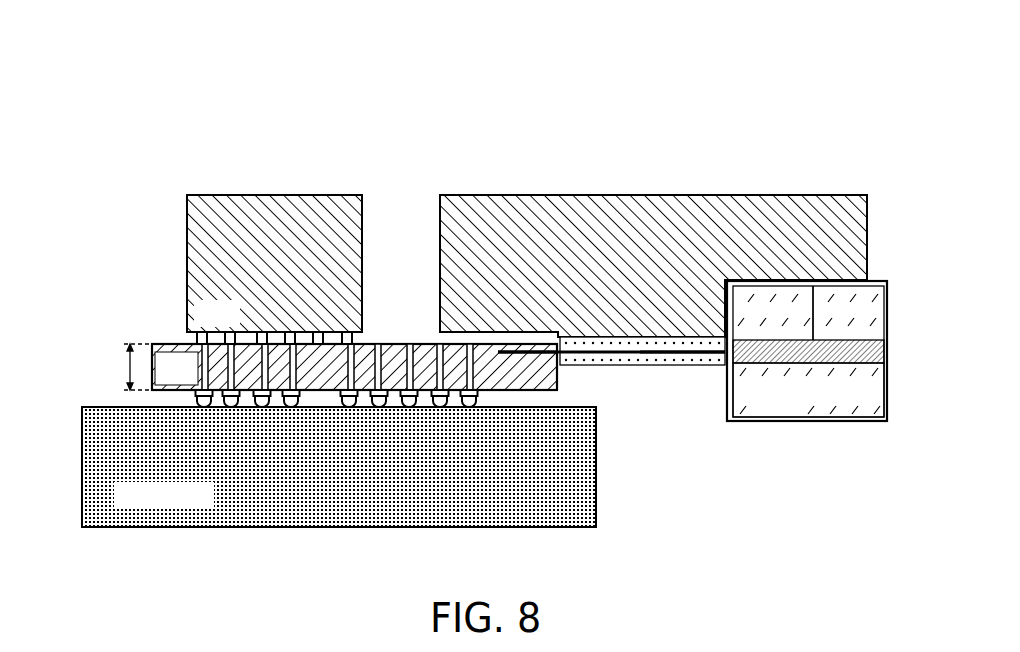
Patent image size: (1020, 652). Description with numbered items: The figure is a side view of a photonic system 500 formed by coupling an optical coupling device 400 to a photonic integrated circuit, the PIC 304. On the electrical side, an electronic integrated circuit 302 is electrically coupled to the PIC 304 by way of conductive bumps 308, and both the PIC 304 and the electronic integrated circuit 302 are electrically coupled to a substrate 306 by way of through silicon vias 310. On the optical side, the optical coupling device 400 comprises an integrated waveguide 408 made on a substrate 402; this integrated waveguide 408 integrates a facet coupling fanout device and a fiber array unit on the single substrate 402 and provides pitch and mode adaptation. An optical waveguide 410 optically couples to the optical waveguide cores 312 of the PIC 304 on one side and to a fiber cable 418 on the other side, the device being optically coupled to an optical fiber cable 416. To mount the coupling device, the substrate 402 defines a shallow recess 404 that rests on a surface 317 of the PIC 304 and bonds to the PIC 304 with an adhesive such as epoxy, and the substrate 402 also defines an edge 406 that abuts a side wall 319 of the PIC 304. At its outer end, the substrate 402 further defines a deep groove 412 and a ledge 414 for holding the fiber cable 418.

The photonic system 500 is at (702, 78).
The optical coupling device 400 is at (635, 157).
The electronic integrated circuit 302 is at (265, 195).
The photonic integrated circuit 304 is at (152, 344).
The substrate 306 is at (82, 463).
The conductive bumps 308 is at (320, 336).
The through silicon vias 310 is at (469, 393).
The optical waveguide cores 312 is at (490, 343).
The surface of the PIC 317 is at (527, 350).
The side wall of the PIC 319 is at (558, 392).
The substrate 402 is at (556, 195).
The shallow recess 404 is at (450, 339).
The edge 406 is at (558, 358).
The integrated waveguide 408 is at (642, 366).
The optical waveguide 410 is at (697, 366).
The deep groove 412 is at (735, 297).
The ledge 414 is at (808, 340).
The optical fiber cable 416 is at (769, 423).
The fiber cable 418 is at (858, 346).